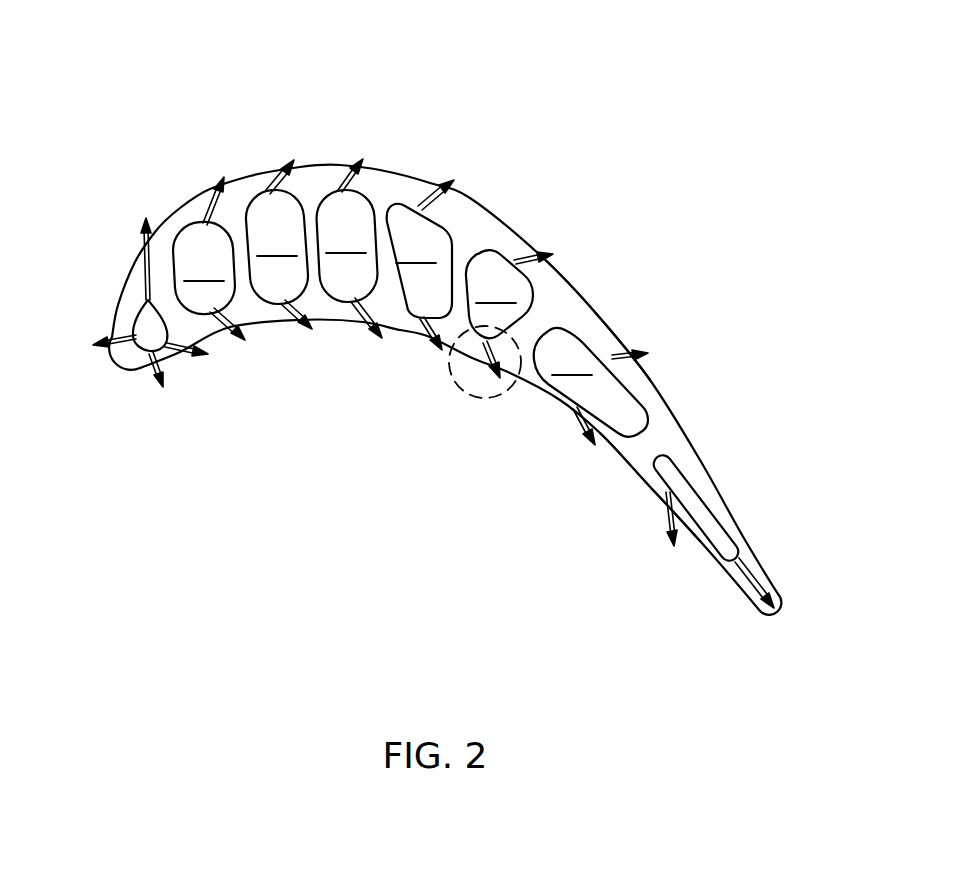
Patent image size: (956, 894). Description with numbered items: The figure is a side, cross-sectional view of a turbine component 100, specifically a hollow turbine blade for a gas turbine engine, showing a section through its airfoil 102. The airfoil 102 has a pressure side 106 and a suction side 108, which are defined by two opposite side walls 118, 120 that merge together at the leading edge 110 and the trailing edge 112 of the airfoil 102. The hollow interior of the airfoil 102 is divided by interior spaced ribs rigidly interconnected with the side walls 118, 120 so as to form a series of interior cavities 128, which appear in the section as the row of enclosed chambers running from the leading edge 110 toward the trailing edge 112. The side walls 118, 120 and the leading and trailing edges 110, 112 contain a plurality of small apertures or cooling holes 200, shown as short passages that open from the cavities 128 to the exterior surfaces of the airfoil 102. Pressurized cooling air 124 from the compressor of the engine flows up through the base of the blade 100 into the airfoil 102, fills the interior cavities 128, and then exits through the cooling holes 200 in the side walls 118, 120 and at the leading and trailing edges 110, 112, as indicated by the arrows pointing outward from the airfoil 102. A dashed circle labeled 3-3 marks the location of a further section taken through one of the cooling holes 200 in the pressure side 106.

The turbine component 100 is at (243, 65).
The airfoil 102 is at (178, 207).
The pressure side 106 is at (510, 393).
The suction side 108 is at (480, 188).
The leading edge 110 is at (152, 382).
The trailing edge 112 is at (773, 622).
The side wall 118 is at (638, 484).
The side wall 120 is at (590, 318).
The pressurized cooling air 124 is at (358, 163).
The interior cavities 128 is at (143, 330).
The cooling holes 200 is at (520, 236).
The section line 3-3 is at (462, 395).